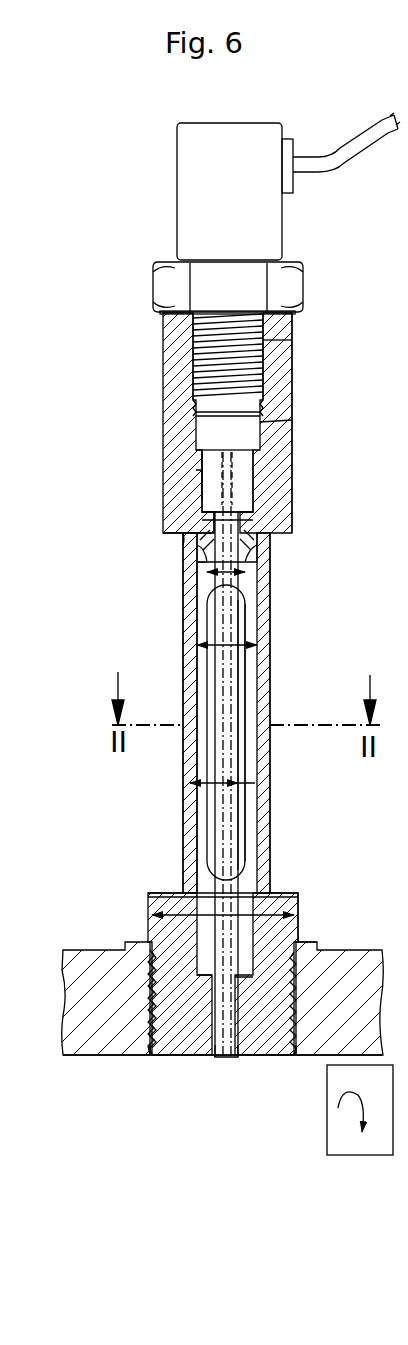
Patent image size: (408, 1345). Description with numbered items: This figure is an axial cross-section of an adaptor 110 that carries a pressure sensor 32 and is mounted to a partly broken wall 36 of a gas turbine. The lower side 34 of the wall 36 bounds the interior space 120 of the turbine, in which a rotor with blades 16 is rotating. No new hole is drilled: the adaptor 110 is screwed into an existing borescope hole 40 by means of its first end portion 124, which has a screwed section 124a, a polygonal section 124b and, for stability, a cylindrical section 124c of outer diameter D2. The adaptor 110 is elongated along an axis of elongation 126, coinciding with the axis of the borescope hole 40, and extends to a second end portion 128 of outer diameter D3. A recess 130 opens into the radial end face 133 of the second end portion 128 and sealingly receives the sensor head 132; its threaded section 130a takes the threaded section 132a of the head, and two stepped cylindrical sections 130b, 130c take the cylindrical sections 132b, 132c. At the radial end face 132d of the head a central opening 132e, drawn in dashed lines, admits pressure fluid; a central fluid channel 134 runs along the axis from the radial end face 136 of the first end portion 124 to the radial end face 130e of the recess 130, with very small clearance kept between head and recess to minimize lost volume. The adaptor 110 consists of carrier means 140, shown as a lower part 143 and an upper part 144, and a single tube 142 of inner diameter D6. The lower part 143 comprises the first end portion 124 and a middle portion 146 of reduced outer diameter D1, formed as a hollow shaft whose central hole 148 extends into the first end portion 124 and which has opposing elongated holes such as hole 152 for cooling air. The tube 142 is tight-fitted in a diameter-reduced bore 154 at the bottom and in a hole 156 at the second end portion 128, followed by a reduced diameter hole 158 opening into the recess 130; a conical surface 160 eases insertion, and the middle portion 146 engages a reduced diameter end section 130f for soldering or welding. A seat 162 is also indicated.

The blades 16 is at (330, 1142).
The pressure sensor 32 is at (288, 236).
The lower side 34 is at (68, 1058).
The wall 36 is at (80, 950).
The borescope hole 40 is at (154, 1060).
The adaptor 110 is at (160, 351).
The interior space 120 is at (200, 1149).
The first end portion 124 is at (300, 922).
The screwed section 124a is at (298, 990).
The polygonal section 124b is at (302, 942).
The cylindrical section 124c is at (282, 893).
The axis of elongation 126 is at (242, 754).
The second end portion 128 is at (294, 396).
The recess 130 is at (380, 432).
The threaded section 130a is at (292, 360).
The stepped cylindrical section 130b is at (253, 456).
The stepped cylindrical section 130c is at (275, 516).
The radial end face 130e is at (205, 492).
The reduced diameter end section 130f is at (190, 540).
The sensor head 132 is at (265, 330).
The threaded section 132a is at (193, 380).
The cylindrical section 132b is at (196, 410).
The cylindrical section 132c is at (205, 458).
The radial end face 132d is at (200, 516).
The central opening 132e is at (254, 486).
The radial end face 133 is at (175, 302).
The central fluid channel 134 is at (260, 612).
The radial end face 136 is at (288, 1059).
The carrier means 140 is at (180, 825).
The tube 142 is at (240, 802).
The lower part 143 is at (181, 862).
The upper part 144 is at (170, 316).
The middle portion 146 is at (181, 672).
The central hole 148 is at (271, 712).
The elongated hole 152 is at (246, 830).
The diameter-reduced central bore 154 is at (230, 1059).
The hole 156 is at (197, 566).
The reduced diameter hole 158 is at (260, 576).
The conical surface 160 is at (172, 975).
The seat 162 is at (165, 915).
The outer diameter D1 is at (271, 658).
The outer diameter D2 is at (152, 893).
The outer diameter D3 is at (272, 548).
The inner diameter D6 is at (190, 783).